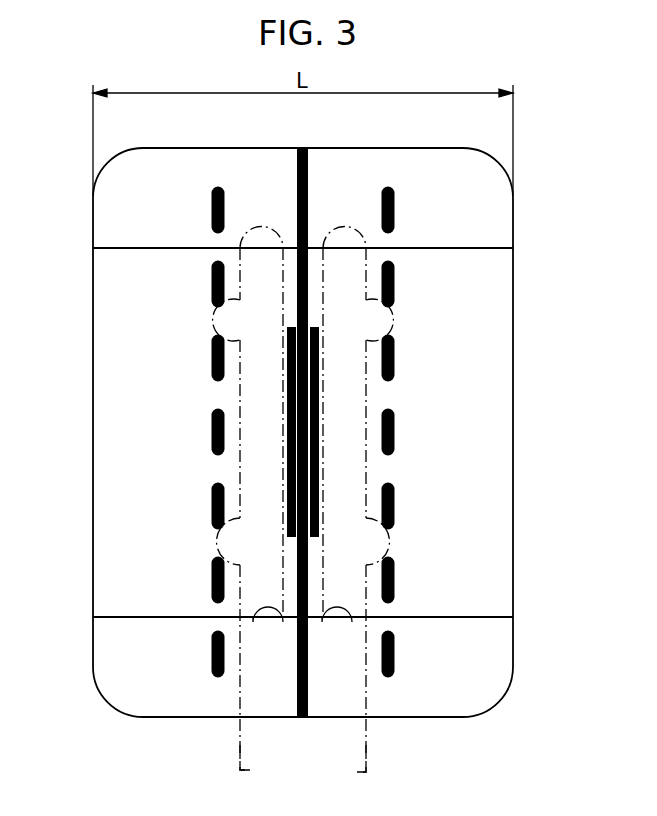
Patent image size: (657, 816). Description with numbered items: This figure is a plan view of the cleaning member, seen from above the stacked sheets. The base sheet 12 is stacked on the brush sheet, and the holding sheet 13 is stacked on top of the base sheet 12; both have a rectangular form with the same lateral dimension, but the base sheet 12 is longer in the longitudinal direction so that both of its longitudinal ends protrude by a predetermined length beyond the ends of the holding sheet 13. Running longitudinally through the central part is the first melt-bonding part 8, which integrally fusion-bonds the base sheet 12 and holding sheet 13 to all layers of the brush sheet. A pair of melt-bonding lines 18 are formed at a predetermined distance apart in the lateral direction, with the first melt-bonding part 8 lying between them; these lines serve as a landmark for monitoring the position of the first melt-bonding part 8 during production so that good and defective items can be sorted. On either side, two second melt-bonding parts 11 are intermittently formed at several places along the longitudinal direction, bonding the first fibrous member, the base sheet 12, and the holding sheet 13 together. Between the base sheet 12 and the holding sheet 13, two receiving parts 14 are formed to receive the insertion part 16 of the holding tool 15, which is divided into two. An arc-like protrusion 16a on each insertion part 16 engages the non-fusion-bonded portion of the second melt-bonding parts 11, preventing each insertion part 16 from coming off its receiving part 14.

The first melt-bonding part 8 is at (308, 184).
The second melt-bonding parts 11 is at (212, 432).
The base sheet 12 is at (488, 222).
The holding sheet 13 is at (492, 598).
The receiving part 14 is at (283, 622).
The holding tool 15 is at (370, 770).
The insertion part 16 is at (253, 455).
The arc-like protrusion 16a is at (383, 320).
The melt-bonding lines 18 is at (288, 475).